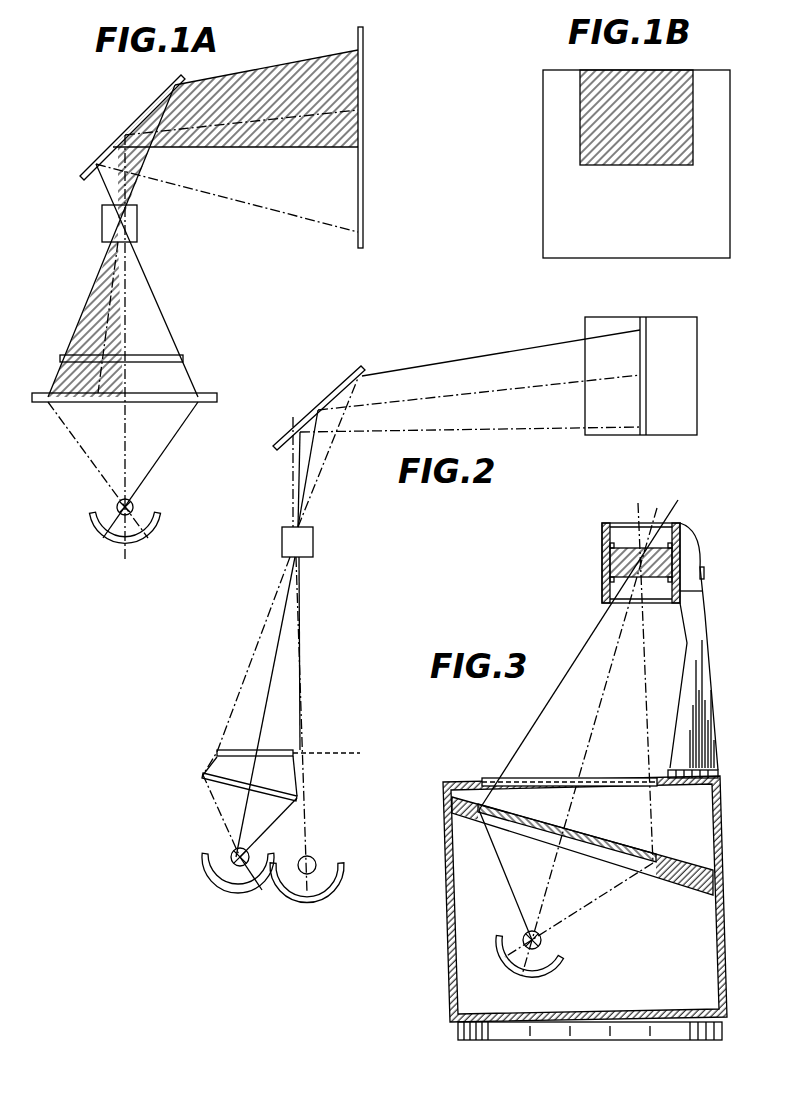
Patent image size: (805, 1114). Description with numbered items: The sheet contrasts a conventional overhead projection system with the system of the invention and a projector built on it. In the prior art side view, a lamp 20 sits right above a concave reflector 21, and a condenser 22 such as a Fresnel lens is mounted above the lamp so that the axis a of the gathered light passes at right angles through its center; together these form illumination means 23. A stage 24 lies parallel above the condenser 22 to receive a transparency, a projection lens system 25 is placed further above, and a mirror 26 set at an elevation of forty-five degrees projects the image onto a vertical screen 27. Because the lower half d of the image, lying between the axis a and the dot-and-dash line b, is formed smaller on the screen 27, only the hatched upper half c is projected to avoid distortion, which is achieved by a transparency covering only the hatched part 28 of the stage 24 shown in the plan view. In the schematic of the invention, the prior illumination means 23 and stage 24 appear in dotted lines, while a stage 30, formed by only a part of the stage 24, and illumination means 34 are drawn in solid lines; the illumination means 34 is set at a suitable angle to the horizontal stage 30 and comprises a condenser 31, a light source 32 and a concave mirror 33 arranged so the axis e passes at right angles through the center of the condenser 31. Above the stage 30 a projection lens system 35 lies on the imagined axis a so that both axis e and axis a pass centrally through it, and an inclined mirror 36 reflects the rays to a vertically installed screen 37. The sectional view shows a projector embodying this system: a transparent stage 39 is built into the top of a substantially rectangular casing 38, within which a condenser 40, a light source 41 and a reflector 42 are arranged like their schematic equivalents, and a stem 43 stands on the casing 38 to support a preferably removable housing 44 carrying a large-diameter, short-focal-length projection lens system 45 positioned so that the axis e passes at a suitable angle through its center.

In FIG. 1A, the lamp 20 is at (135, 509).
In FIG. 1A, the concave reflector 21 is at (135, 540).
In FIG. 1A, the condenser 22 is at (225, 385).
In FIG. 1A, the illumination means 23 is at (163, 440).
In FIG. 2, the illumination means 23 is at (318, 864).
In FIG. 1A, the stage 24 is at (163, 353).
In FIG. 1B, the stage 24 is at (557, 212).
In FIG. 2, the stage 24 is at (360, 752).
In FIG. 1A, the projection lens system 25 is at (133, 222).
In FIG. 1A, the mirror 26 is at (130, 133).
In FIG. 1A, the screen 27 is at (363, 66).
In FIG. 1B, the hatched part of stage 28 is at (628, 160).
In FIG. 2, the stage 30 is at (233, 751).
In FIG. 2, the condenser 31 is at (290, 792).
In FIG. 2, the light source 32 is at (233, 868).
In FIG. 2, the concave mirror 33 is at (256, 893).
In FIG. 2, the illumination means 34 is at (230, 812).
In FIG. 2, the projection lens system 35 is at (306, 540).
In FIG. 2, the inclined mirror 36 is at (328, 398).
In FIG. 2, the screen 37 is at (647, 349).
In FIG. 3, the casing 38 is at (724, 936).
In FIG. 3, the transparent stage 39 is at (540, 778).
In FIG. 3, the condenser 40 is at (612, 852).
In FIG. 3, the light source 41 is at (542, 941).
In FIG. 3, the reflector 42 is at (556, 966).
In FIG. 3, the stem 43 is at (702, 640).
In FIG. 3, the housing 44 is at (680, 557).
In FIG. 3, the projection lens system 45 is at (608, 565).
In FIG. 1A, the axis a is at (337, 150).
In FIG. 2, the axis a is at (302, 700).
In FIG. 1A, the dot-and-dash line b is at (303, 222).
In FIG. 1A, the upper half of image c is at (55, 282).
In FIG. 1A, the lower half of image d is at (350, 200).
In FIG. 2, the axis e is at (283, 628).
In FIG. 3, the axis e is at (606, 688).